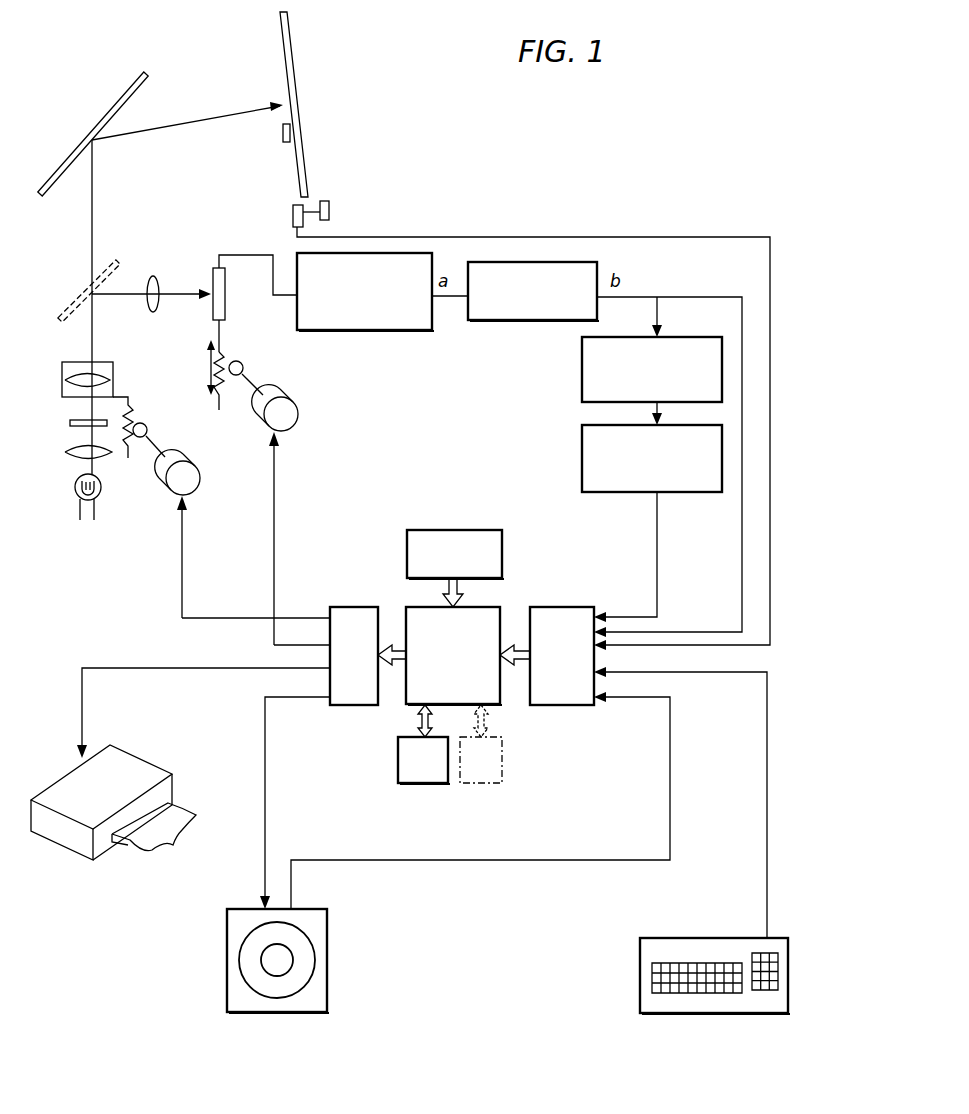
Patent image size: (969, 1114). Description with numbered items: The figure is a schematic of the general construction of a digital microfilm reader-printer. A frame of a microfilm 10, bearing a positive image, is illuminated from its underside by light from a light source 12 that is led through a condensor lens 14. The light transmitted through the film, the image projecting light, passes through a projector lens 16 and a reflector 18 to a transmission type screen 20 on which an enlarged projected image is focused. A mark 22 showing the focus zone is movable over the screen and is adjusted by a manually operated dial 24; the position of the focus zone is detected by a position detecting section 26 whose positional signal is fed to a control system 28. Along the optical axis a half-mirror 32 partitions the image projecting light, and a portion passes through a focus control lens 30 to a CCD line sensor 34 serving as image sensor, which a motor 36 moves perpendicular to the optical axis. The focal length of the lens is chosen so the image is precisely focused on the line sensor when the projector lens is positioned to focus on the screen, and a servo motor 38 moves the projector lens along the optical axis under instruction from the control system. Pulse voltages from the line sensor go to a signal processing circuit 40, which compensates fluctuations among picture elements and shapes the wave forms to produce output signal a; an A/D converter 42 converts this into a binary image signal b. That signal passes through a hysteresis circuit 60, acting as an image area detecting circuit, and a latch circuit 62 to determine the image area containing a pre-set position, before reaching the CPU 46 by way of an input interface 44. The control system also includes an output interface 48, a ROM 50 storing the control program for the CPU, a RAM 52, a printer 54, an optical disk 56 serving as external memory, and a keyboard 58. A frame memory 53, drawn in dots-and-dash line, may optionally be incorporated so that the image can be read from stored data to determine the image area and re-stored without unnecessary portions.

The frame of a microfilm 10 is at (70, 422).
The light source 12 is at (76, 490).
The condensor lens 14 is at (66, 452).
The projector lens 16 is at (62, 376).
The reflector 18 is at (96, 125).
The transmission type screen 20 is at (293, 66).
The mark 22 is at (283, 133).
The manually operated dial 24 is at (330, 205).
The position detecting section 26 is at (293, 222).
The control system 28 is at (426, 508).
The focus control lens 30 is at (157, 283).
The half-mirror 32 is at (78, 286).
The CCD line sensor 34 is at (226, 300).
The motor 36 is at (297, 418).
The servo motor 38 is at (200, 482).
The signal processing circuit 40 is at (420, 333).
The A/D converter 42 is at (471, 322).
The input interface 44 is at (570, 607).
The CPU 46 is at (487, 607).
The output interface 48 is at (357, 607).
The ROM 50 is at (462, 530).
The RAM 52 is at (410, 784).
The frame memory 53 is at (487, 785).
The printer 54 is at (173, 782).
The optical disk 56 is at (328, 935).
The keyboard 58 is at (640, 952).
The hysteresis circuit 60 is at (582, 380).
The latch circuit 62 is at (582, 440).